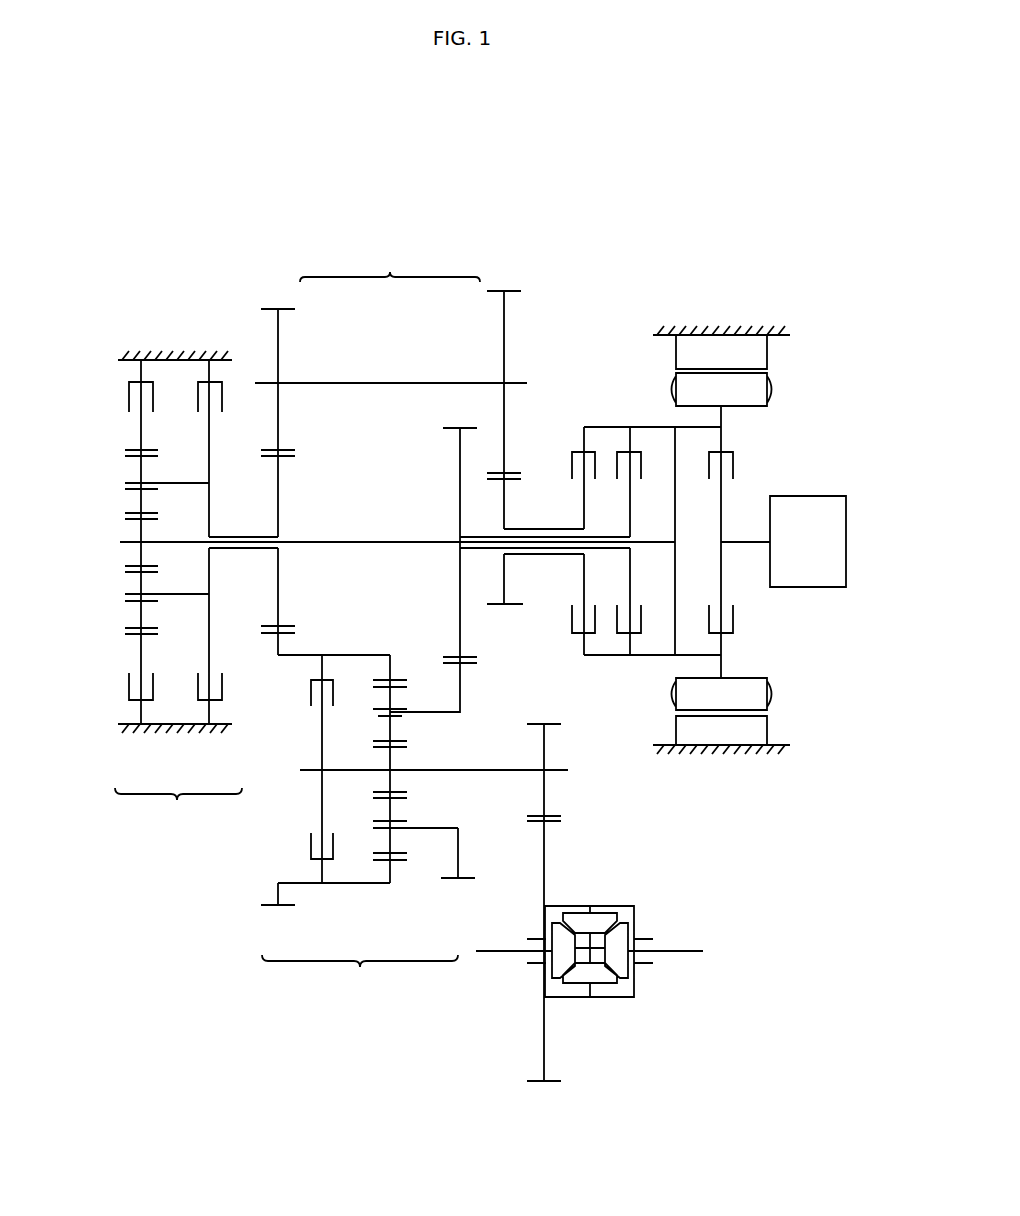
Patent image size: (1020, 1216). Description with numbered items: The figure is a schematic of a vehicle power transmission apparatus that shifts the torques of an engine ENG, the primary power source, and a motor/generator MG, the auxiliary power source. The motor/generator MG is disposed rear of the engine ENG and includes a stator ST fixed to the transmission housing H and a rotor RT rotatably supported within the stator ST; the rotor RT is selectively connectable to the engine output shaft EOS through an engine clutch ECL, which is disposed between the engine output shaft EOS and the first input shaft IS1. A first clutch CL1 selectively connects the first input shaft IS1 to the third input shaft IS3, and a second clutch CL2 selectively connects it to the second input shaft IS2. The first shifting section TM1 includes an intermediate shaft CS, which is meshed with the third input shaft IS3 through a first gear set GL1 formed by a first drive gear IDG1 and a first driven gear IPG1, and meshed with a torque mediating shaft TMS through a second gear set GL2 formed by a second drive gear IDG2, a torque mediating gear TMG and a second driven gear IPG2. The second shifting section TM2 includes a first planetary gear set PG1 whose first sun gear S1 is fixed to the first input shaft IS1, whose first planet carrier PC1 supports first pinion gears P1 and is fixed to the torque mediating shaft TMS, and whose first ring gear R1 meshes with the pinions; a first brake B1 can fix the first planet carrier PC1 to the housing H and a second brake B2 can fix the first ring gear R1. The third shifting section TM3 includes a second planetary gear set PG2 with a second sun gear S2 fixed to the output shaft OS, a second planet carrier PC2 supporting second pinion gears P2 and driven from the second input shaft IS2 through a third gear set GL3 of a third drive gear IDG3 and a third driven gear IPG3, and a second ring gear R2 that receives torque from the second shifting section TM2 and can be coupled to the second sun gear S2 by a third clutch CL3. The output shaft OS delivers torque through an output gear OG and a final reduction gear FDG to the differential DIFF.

The first brake B1 is at (183, 387).
The second brake B2 is at (116, 377).
The transmission housing H is at (209, 352).
The first planetary gear set PG1 is at (140, 524).
The first ring gear R1 is at (152, 452).
The first pinion gears P1 is at (144, 469).
The first planet carrier PC1 is at (183, 490).
The first sun gear S1 is at (132, 520).
The torque mediating shaft TMS is at (243, 548).
The second shifting section TM2 is at (178, 810).
The first shifting section TM1 is at (390, 262).
The second gear set GL2 is at (283, 299).
The second drive gear IDG2 is at (278, 346).
The torque mediating gear TMG is at (278, 495).
The intermediate shaft CS is at (403, 383).
The first gear set GL1 is at (509, 281).
The first driven gear IPG1 is at (505, 337).
The first drive gear IDG1 is at (505, 503).
The third drive gear IDG3 is at (459, 483).
The first input shaft IS1 is at (390, 545).
The second input shaft IS2 is at (530, 550).
The third input shaft IS3 is at (556, 550).
The first clutch CL1 is at (569, 447).
The second clutch CL2 is at (612, 447).
The third clutch CL3 is at (304, 711).
The motor/generator MG is at (754, 540).
The stator ST is at (721, 540).
The rotor RT is at (722, 541).
The engine clutch ECL is at (741, 461).
The engine ENG is at (808, 541).
The engine output shaft EOS is at (745, 545).
The third shifting section TM3 is at (360, 979).
The second driven gear IPG2 is at (277, 648).
The third driven gear IPG3 is at (461, 687).
The second planetary gear set PG2 is at (394, 792).
The second ring gear R2 is at (400, 677).
The second pinion gears P2 is at (388, 697).
The second sun gear S2 is at (376, 752).
The second planet carrier PC2 is at (437, 713).
The third gear set GL3 is at (454, 888).
The output shaft OS is at (487, 771).
The output gear OG is at (546, 792).
The final reduction gear FDG is at (546, 866).
The differential DIFF is at (656, 909).